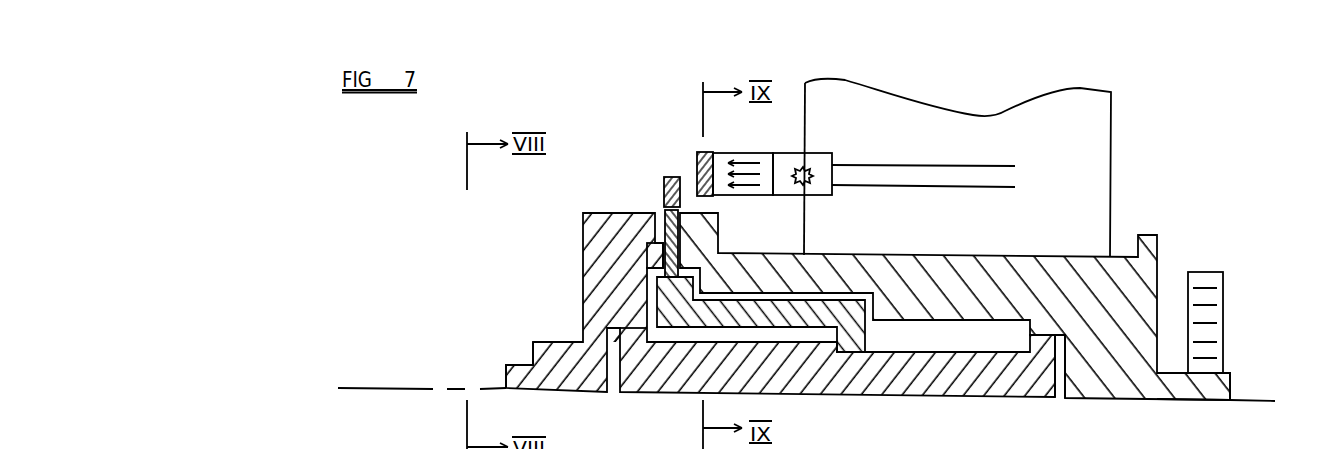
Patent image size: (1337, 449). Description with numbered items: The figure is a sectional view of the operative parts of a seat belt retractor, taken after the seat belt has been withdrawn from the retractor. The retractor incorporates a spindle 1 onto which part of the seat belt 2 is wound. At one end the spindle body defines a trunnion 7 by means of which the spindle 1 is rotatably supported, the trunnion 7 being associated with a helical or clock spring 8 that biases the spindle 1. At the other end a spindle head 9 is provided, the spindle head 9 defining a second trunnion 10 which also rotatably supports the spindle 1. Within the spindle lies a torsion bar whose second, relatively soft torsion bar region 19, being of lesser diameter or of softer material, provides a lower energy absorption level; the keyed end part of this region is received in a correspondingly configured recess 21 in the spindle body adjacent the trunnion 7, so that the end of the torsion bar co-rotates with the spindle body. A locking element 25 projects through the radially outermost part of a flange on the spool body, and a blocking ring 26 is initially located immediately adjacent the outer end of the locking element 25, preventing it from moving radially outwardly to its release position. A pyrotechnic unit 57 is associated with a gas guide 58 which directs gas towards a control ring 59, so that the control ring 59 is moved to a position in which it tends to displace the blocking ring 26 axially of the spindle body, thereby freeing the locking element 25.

The spindle 1 is at (1193, 203).
The seat belt 2 is at (1067, 121).
The trunnion 7 is at (1182, 400).
The clock spring 8 is at (1223, 324).
The spindle head 9 is at (610, 277).
The second trunnion 10 is at (510, 365).
The second torsion bar region 19 is at (903, 394).
The recess 21 is at (1060, 397).
The locking element 25 is at (683, 245).
The blocking ring 26 is at (664, 185).
The pyrotechnic unit 57 is at (797, 152).
The gas guide 58 is at (740, 152).
The control ring 59 is at (695, 162).